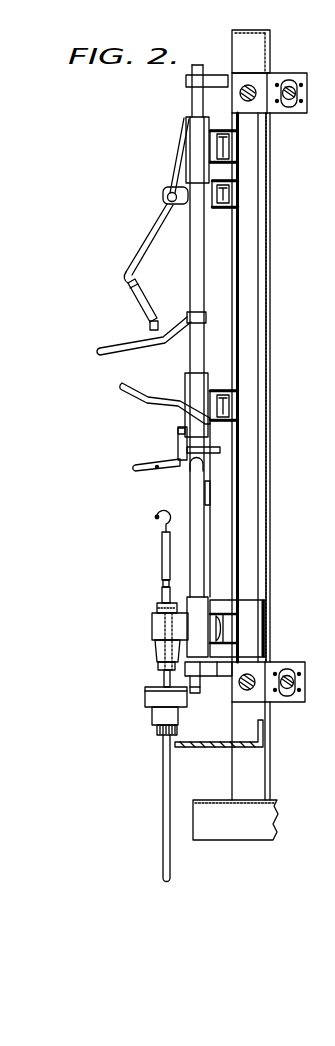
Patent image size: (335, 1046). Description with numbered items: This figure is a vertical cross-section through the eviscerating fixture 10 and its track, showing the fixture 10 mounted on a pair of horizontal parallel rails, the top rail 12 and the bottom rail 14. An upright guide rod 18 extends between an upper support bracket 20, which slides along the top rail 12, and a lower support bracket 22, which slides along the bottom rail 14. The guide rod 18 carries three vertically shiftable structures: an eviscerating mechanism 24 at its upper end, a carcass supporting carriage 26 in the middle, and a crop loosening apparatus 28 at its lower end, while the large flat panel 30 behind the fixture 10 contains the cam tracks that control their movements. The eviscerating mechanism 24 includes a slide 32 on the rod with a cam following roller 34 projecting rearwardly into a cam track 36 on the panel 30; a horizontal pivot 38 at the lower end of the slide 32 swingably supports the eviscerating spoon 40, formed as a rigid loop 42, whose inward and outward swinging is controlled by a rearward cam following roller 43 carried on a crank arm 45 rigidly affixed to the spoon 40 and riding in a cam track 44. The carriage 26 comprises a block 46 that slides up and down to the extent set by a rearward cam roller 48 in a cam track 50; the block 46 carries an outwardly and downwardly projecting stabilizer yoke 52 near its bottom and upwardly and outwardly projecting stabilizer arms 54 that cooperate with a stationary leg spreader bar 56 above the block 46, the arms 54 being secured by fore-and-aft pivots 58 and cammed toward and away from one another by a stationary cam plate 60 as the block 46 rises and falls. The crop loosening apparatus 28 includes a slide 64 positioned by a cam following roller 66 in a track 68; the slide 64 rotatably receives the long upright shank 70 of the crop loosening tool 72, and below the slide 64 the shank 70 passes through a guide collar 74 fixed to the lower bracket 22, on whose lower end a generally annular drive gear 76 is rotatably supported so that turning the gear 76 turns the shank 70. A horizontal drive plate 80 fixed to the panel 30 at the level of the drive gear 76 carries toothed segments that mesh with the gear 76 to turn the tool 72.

The eviscerating fixture 10 is at (106, 320).
The top rail 12 is at (258, 87).
The bottom rail 14 is at (267, 668).
The guide rod 18 is at (197, 526).
The upper support bracket 20 is at (228, 78).
The lower support bracket 22 is at (224, 673).
The eviscerating mechanism 24 is at (136, 217).
The carcass supporting carriage 26 is at (166, 418).
The crop loosening apparatus 28 is at (152, 589).
The panel 30 is at (229, 318).
The slide 32 is at (183, 120).
The cam following roller 34 is at (263, 137).
The cam track 36 is at (227, 160).
The horizontal pivot 38 is at (165, 192).
The eviscerating spoon 40 is at (134, 254).
The rigid loop 42 is at (158, 320).
The cam following roller 43 is at (230, 195).
The cam track 44 is at (227, 214).
The crank arm 45 is at (185, 152).
The block 46 is at (187, 377).
The cam roller 48 is at (214, 392).
The cam track 50 is at (237, 405).
The stabilizer yoke 52 is at (143, 473).
The stabilizer arms 54 is at (145, 400).
The leg spreader bar 56 is at (113, 356).
The fore-and-aft pivots 58 is at (178, 429).
The cam plate 60 is at (218, 452).
The slide 64 is at (155, 623).
The cam following roller 66 is at (213, 624).
The track 68 is at (235, 632).
The shank 70 is at (163, 563).
The crop loosening tool 72 is at (154, 533).
The guide collar 74 is at (150, 717).
The drive gear 76 is at (158, 739).
The drive plate 80 is at (218, 746).